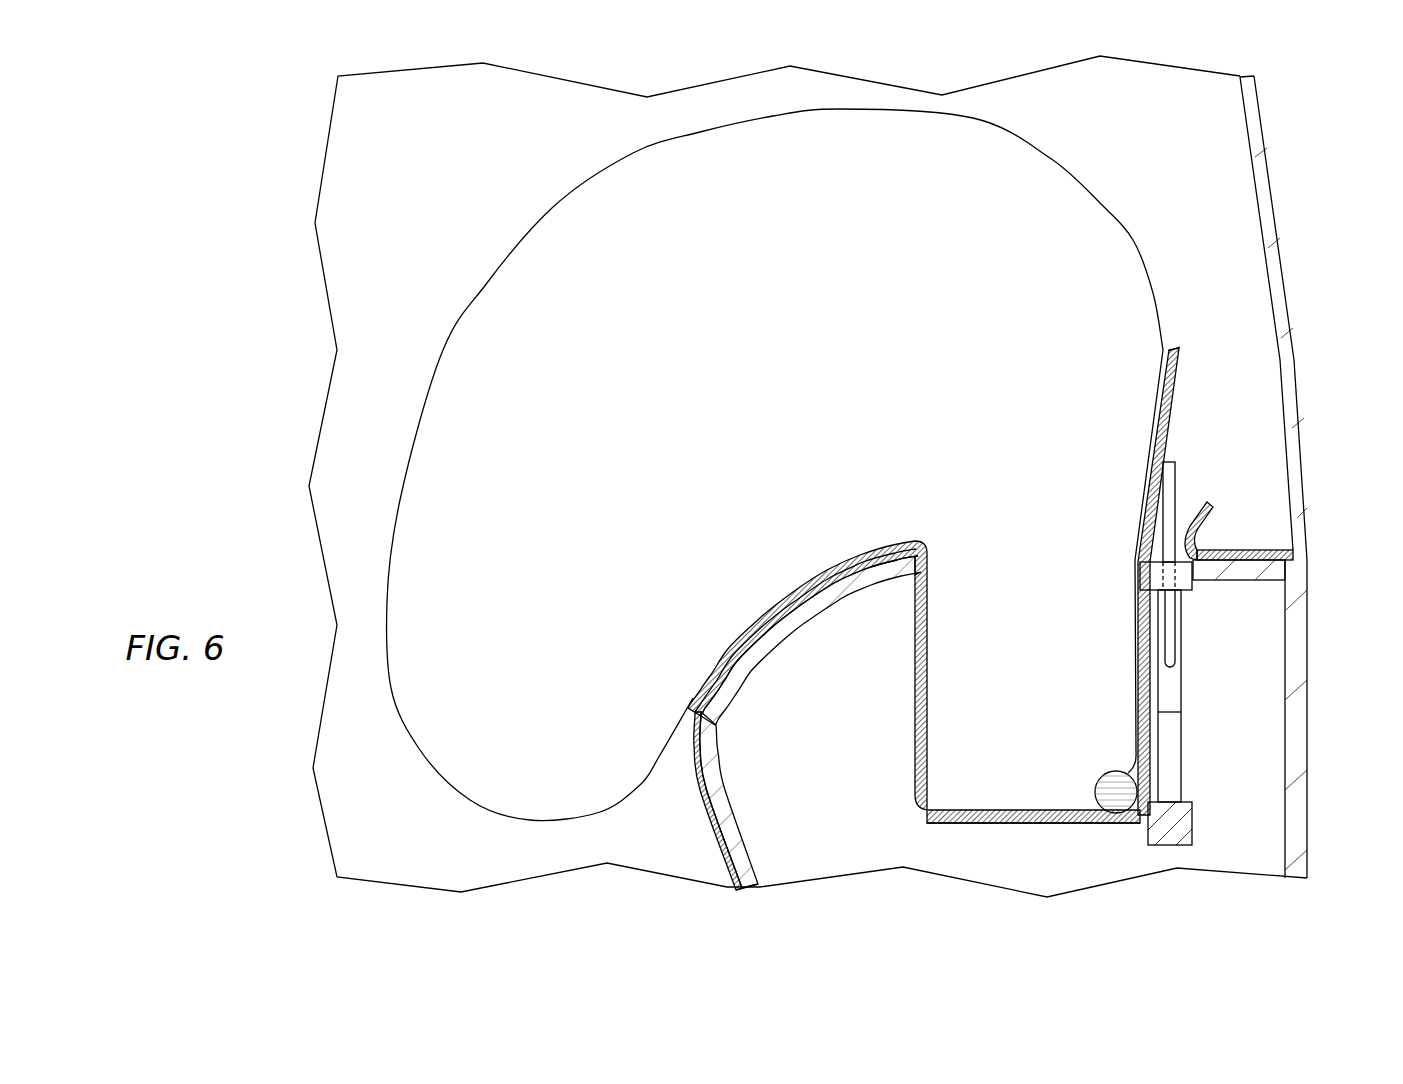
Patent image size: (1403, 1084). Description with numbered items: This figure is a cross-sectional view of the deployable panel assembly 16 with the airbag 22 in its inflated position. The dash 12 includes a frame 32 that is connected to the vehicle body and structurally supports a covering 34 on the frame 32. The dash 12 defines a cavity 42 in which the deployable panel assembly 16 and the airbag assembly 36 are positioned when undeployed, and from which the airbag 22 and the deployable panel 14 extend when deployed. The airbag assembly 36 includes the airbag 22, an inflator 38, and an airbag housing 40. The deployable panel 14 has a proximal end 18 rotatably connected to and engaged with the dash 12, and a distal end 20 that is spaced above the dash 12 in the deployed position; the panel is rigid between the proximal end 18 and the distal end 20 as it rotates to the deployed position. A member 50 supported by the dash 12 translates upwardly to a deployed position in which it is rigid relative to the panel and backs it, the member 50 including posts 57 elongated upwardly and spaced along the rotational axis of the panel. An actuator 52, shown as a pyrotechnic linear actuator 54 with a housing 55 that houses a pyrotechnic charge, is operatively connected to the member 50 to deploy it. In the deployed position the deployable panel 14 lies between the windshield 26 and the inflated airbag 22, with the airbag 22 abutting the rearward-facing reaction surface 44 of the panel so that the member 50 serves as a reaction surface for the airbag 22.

The dash 12 is at (690, 852).
The deployable panel 14 is at (1236, 760).
The deployable panel assembly 16 is at (1175, 400).
The proximal end 18 is at (1138, 565).
The distal end 20 is at (1170, 352).
The airbag 22 is at (518, 240).
The windshield 26 is at (1288, 281).
The frame 32 is at (1170, 845).
The covering 34 is at (700, 795).
The airbag assembly 36 is at (1033, 843).
The inflator 38 is at (1140, 820).
The airbag housing 40 is at (958, 823).
The cavity 42 is at (847, 828).
The reaction surface 44 is at (1157, 415).
The member 50 is at (1178, 495).
The actuator 52 is at (1202, 783).
The pyrotechnic linear actuator 54 is at (1282, 850).
The housing 55 is at (1183, 735).
The posts 57 is at (1176, 463).